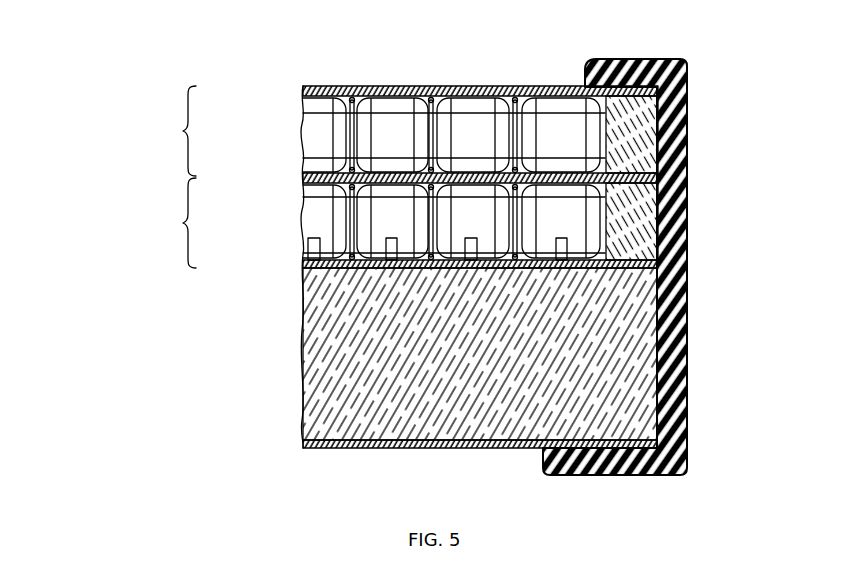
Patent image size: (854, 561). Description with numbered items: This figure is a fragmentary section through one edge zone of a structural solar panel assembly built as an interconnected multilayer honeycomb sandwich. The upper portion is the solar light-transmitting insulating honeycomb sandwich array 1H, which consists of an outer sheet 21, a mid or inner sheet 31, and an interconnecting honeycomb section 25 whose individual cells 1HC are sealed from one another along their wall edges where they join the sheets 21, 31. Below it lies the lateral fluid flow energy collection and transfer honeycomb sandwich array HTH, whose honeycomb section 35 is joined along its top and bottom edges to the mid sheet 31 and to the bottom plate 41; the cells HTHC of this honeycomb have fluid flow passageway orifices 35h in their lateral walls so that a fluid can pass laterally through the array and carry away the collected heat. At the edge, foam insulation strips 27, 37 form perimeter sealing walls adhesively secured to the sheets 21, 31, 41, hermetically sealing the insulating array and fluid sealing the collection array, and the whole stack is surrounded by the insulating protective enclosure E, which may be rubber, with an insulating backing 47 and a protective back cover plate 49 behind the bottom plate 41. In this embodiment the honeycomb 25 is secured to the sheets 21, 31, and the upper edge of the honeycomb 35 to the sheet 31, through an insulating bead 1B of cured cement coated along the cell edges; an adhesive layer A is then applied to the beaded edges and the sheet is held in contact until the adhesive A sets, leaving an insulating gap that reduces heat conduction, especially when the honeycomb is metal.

The outer sheet 21 is at (316, 86).
The cells of the insulating honeycomb 1HC is at (402, 85).
The insulating bead 1B is at (485, 86).
The adhesive layer A is at (350, 102).
The insulating honeycomb sandwich array 1H is at (172, 131).
The energy collection and transfer honeycomb sandwich array HTH is at (166, 223).
The honeycomb section 25 is at (322, 150).
The inner sheet 31 is at (317, 174).
The honeycomb section 35 is at (314, 219).
The fluid flow passageway orifices 35h is at (556, 241).
The bottom plate 41 is at (303, 264).
The insulating backing 47 is at (303, 344).
The protective back cover plate 49 is at (411, 448).
The foam insulation strip 27 is at (640, 132).
The honeycomb cells HTHC is at (578, 204).
The foam insulation strip 37 is at (640, 238).
The insulating protective enclosure E is at (682, 393).